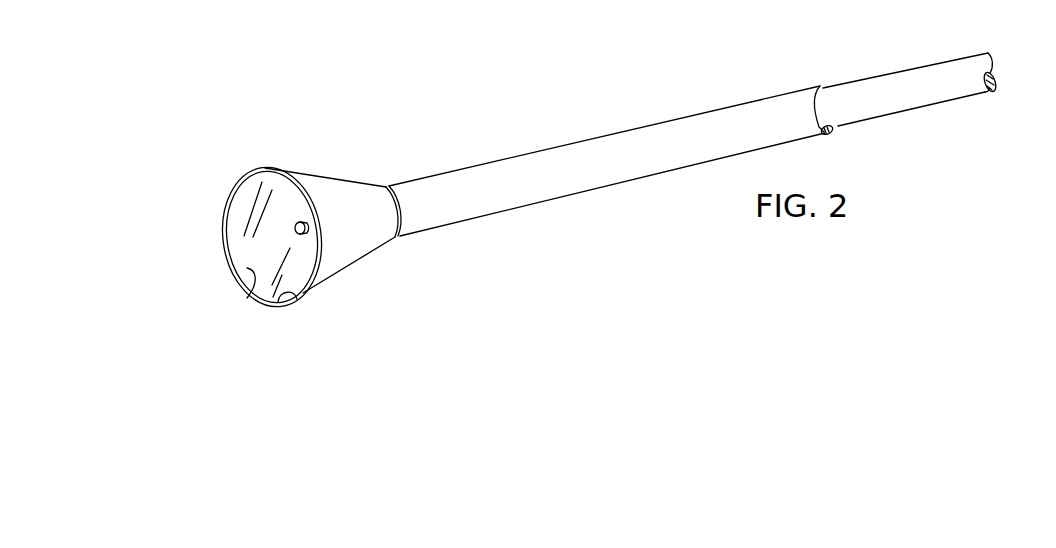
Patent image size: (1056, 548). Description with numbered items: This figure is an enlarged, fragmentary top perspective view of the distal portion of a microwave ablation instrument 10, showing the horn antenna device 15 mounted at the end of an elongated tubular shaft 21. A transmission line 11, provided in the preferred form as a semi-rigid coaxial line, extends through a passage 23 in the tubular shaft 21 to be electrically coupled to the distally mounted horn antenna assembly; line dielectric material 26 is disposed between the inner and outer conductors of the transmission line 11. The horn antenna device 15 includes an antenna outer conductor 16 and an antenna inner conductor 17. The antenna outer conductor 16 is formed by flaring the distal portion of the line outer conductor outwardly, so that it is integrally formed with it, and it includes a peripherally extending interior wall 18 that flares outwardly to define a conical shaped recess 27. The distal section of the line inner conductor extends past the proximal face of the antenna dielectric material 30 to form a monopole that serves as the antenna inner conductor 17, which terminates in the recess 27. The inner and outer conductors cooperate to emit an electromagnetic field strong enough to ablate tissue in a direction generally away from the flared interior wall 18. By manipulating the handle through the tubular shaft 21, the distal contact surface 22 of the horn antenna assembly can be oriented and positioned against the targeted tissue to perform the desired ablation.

The microwave ablation instrument 10 is at (518, 84).
The transmission line 11 is at (903, 70).
The horn antenna device 15 is at (366, 122).
The antenna outer conductor 16 is at (338, 268).
The antenna inner conductor 17 is at (296, 229).
The interior wall 18 is at (280, 303).
The tubular shaft 21 is at (580, 138).
The distal contact surface 22 is at (240, 197).
The passage 23 is at (826, 128).
The line dielectric material 26 is at (998, 73).
The conical shaped recess 27 is at (247, 298).
The antenna dielectric material 30 is at (262, 168).